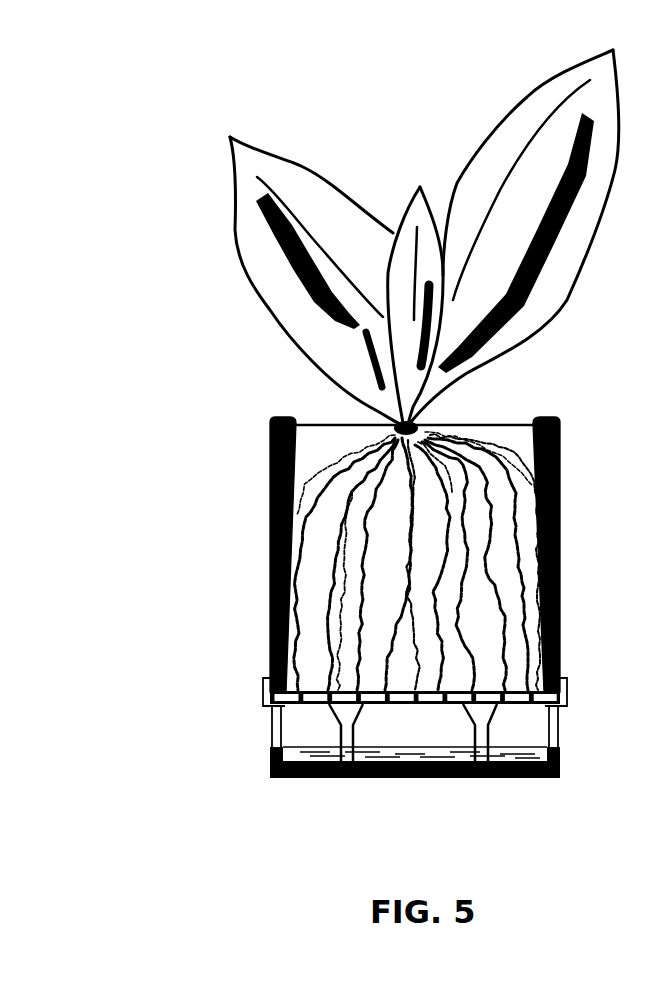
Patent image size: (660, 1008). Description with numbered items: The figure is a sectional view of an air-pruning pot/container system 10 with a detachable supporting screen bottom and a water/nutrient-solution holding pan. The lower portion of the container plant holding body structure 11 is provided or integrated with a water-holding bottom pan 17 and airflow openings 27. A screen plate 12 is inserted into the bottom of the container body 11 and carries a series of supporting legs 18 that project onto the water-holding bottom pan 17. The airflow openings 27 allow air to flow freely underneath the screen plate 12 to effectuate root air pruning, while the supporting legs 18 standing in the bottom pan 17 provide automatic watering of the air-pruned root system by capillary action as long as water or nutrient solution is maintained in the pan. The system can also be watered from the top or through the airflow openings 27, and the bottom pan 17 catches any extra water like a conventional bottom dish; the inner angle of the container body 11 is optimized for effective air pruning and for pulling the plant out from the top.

The plant growing system 10 is at (178, 370).
The container plant holding body structure 11 is at (560, 440).
The screen plate 12 is at (413, 690).
The water-holding bottom pan 17 is at (560, 757).
The supporting legs 18 is at (495, 733).
The airflow openings 27 is at (277, 718).